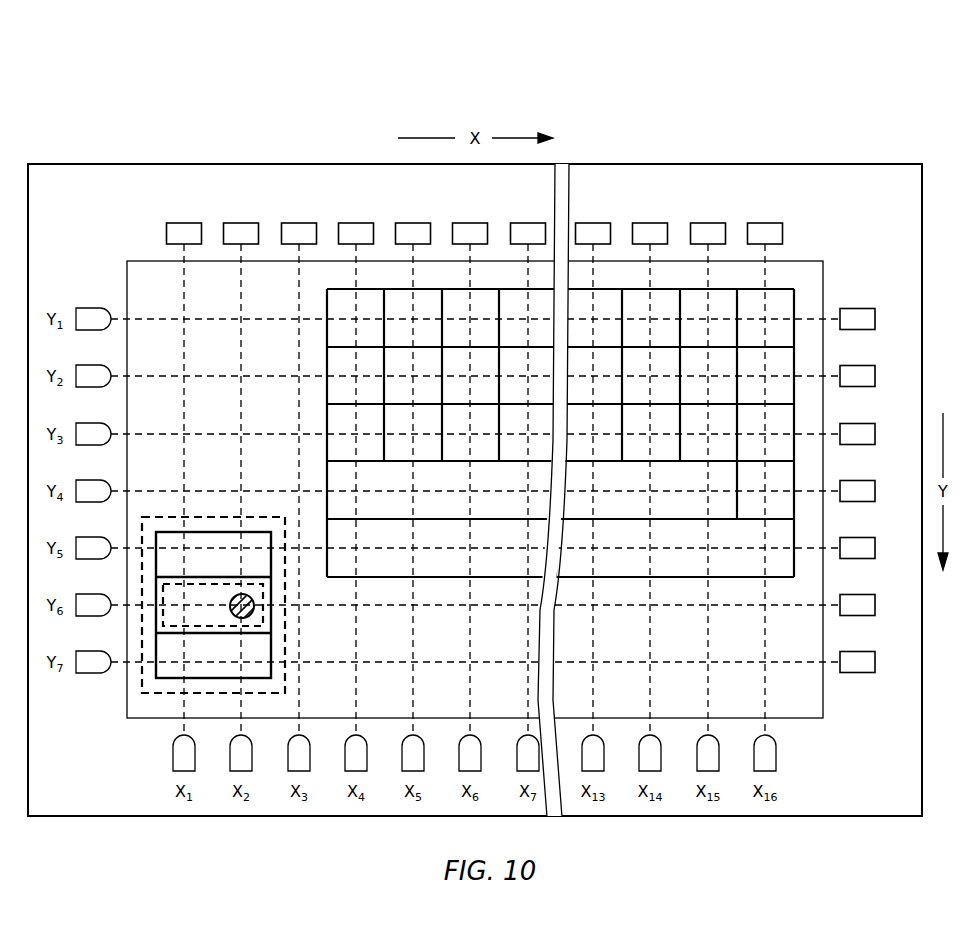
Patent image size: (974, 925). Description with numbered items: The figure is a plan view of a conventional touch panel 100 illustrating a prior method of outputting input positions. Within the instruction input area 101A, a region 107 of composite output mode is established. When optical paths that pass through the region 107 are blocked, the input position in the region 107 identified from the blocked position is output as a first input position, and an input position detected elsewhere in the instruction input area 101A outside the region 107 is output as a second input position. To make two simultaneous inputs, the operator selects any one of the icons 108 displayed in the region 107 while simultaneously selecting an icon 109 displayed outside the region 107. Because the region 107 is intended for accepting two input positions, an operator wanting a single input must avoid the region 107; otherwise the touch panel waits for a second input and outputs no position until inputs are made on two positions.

The roulette game board / gaming machine display 100 is at (906, 132).
The instruction input area 101A is at (793, 692).
The region of composite output mode 107 is at (224, 693).
The icons 108 is at (165, 557).
The icon 109 is at (608, 302).